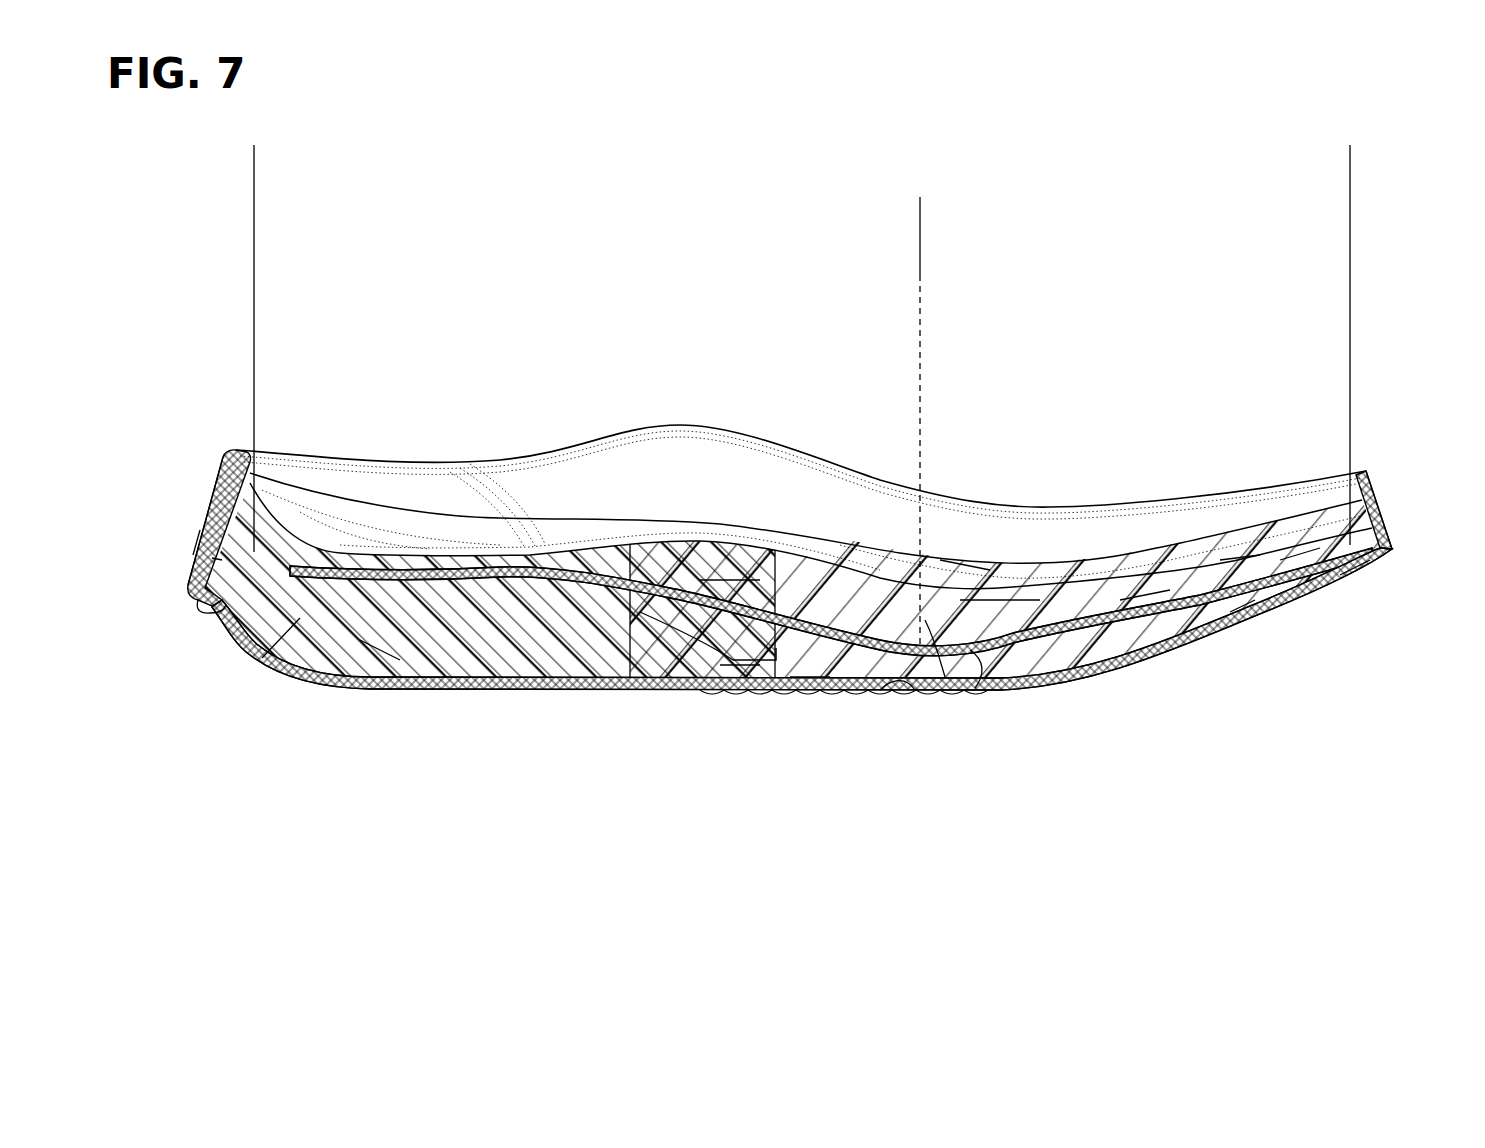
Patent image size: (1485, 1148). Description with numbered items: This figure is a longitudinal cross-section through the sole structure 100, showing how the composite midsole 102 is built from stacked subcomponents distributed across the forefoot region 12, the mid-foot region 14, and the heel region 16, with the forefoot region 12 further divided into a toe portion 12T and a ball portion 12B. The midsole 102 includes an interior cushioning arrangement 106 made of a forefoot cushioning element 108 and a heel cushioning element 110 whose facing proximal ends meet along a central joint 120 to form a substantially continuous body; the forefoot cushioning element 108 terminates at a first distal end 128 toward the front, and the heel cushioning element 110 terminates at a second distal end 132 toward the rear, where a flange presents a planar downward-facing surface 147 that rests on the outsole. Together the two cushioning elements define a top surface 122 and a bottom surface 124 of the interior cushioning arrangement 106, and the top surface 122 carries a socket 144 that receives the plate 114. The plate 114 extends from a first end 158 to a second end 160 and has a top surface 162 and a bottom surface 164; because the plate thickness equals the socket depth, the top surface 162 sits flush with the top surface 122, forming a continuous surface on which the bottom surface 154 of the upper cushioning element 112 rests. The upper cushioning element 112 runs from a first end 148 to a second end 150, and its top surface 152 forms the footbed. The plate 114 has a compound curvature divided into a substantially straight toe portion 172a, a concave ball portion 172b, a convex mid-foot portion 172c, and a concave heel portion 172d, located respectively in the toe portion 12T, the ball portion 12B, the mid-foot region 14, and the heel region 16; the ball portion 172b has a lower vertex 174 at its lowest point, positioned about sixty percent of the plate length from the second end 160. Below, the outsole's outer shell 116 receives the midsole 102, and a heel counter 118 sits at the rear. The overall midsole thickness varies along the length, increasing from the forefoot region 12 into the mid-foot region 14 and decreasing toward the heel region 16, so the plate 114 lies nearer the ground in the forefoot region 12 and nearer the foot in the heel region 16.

The sole structure 100 is at (805, 476).
The midsole 102 is at (1242, 607).
The interior cushioning arrangement 106 is at (1143, 650).
The forefoot cushioning element 108 is at (810, 675).
The heel cushioning element 110 is at (378, 648).
The upper cushioning element 112 is at (811, 570).
The plate 114 is at (1103, 610).
The outer shell 116 is at (802, 681).
The heel counter 118 is at (169, 512).
The central joint 120 is at (698, 683).
The top surface 122 is at (722, 588).
The bottom surface 124 is at (737, 672).
The first distal end 128 is at (1383, 552).
The second distal end 132 is at (197, 538).
The socket 144 is at (1225, 506).
The downward-facing surface 147 is at (210, 604).
The first end 148 is at (1380, 500).
The second end 150 is at (218, 470).
The top surface 152 is at (523, 546).
The bottom surface 154 is at (977, 622).
The first end 158 is at (1363, 553).
The second end 160 is at (212, 562).
The top surface 162 is at (965, 650).
The bottom surface 164 is at (930, 622).
The toe portion 172a is at (1297, 556).
The ball portion 172b is at (995, 645).
The mid-foot portion 172c is at (636, 605).
The heel portion 172d is at (275, 622).
The lower vertex 174 is at (893, 692).
The forefoot region 12 is at (1380, 893).
The ball portion 12B is at (1153, 823).
The toe portion 12T is at (1367, 823).
The mid-foot region 14 is at (762, 893).
The heel region 16 is at (500, 893).